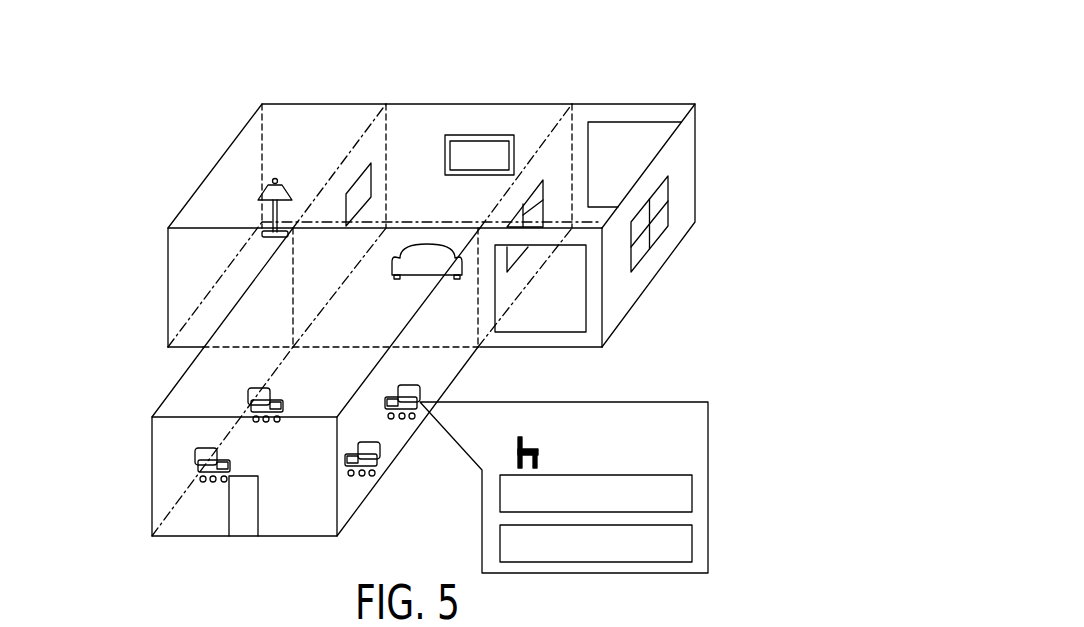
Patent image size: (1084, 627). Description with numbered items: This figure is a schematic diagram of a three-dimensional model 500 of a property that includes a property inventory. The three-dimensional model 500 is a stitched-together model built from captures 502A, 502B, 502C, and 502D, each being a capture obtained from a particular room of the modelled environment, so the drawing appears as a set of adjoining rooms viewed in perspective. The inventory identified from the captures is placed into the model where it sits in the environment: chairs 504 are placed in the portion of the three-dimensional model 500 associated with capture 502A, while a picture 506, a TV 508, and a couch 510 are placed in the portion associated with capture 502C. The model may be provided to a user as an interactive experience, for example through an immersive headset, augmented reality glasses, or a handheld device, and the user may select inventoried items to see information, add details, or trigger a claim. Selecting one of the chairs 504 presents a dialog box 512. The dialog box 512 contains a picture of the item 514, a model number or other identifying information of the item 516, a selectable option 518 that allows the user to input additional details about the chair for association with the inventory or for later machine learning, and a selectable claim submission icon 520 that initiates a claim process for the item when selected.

The three-dimensional model 500 is at (672, 72).
The capture 502A is at (222, 385).
The capture 502B is at (248, 184).
The capture 502C is at (413, 122).
The capture 502D is at (597, 141).
The chairs 504 is at (250, 402).
The picture 506 is at (366, 192).
The TV 508 is at (480, 131).
The couch 510 is at (416, 272).
The dialog box 512 is at (652, 402).
The picture of the item 514 is at (516, 452).
The model number or other identifying information of the item 516 is at (681, 449).
The selectable option 518 is at (692, 490).
The selectable claim submission icon 520 is at (692, 540).